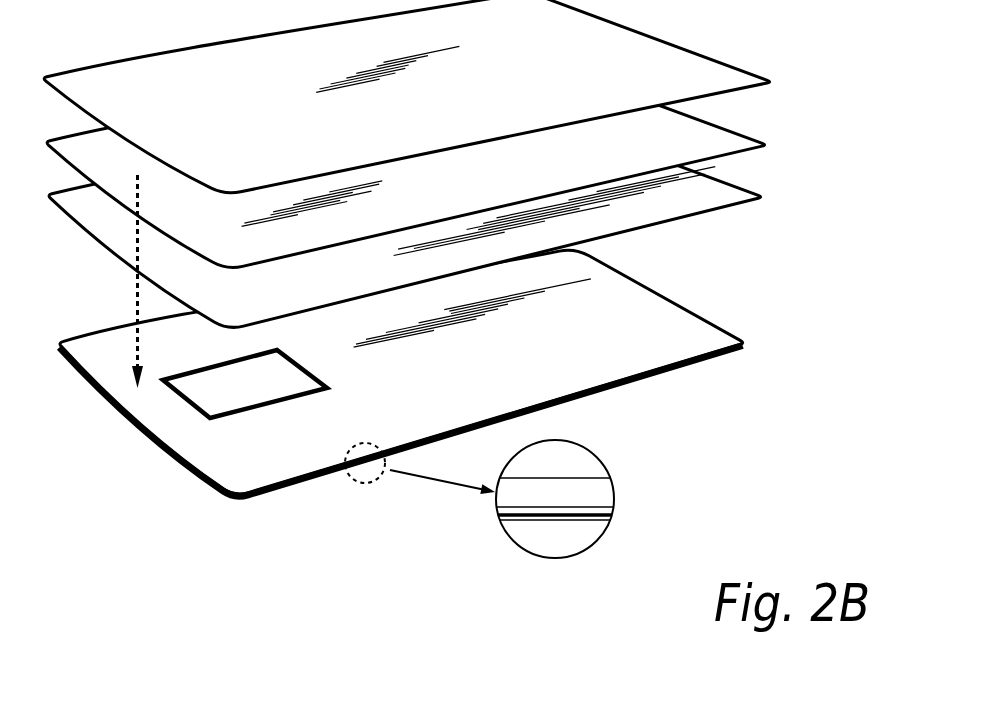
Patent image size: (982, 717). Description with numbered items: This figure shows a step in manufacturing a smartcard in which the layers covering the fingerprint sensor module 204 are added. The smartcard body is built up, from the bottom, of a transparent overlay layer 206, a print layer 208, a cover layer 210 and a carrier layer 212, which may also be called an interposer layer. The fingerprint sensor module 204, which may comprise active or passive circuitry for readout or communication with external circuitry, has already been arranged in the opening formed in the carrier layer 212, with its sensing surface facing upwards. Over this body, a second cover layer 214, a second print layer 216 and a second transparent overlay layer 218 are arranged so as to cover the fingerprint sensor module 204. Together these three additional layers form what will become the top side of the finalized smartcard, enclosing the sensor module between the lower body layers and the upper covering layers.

The fingerprint sensor module 204 is at (212, 402).
The transparent overlay layer 206 is at (610, 520).
The print layer 208 is at (610, 517).
The cover layer 210 is at (613, 510).
The carrier layer 212 is at (612, 497).
The second cover layer 214 is at (648, 217).
The second print layer 216 is at (725, 135).
The second transparent overlay layer 218 is at (730, 78).